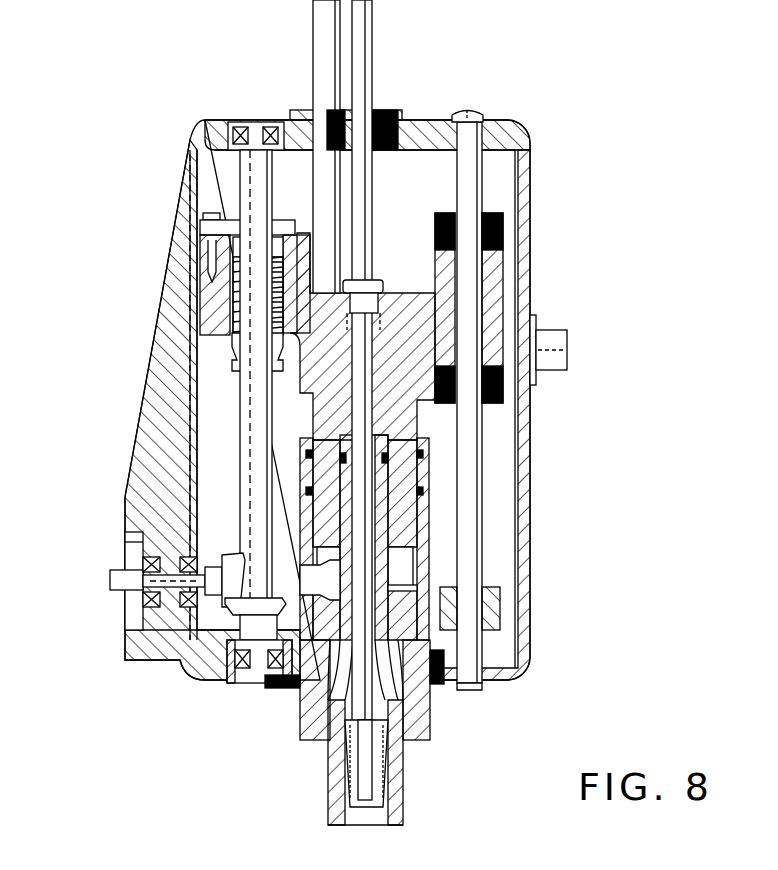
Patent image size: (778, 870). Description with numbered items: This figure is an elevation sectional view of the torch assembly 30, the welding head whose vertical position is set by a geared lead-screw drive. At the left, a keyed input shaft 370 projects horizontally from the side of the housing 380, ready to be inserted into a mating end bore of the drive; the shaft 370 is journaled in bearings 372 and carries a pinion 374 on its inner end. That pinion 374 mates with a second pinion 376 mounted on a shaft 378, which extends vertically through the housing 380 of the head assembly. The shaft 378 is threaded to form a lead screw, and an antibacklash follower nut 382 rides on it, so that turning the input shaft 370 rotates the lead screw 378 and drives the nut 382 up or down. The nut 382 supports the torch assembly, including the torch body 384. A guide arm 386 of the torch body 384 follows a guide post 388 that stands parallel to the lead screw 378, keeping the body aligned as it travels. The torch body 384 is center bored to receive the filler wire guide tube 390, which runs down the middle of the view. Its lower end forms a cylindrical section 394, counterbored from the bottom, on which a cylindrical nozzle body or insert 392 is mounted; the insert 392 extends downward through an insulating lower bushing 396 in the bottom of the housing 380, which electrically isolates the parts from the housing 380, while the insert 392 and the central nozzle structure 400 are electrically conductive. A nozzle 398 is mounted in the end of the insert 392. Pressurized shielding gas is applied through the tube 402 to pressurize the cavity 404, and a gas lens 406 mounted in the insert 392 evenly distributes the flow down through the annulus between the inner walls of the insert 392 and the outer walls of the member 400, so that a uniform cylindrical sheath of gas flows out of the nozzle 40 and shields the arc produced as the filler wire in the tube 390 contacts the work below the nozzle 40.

The torch assembly 30 is at (180, 86).
The nozzle 40 is at (403, 782).
The keyed input shaft 370 is at (120, 578).
The bearings 372 is at (160, 622).
The pinion 374 is at (217, 570).
The pinion 376 is at (240, 625).
The shaft (lead screw) 378 is at (257, 440).
The housing 380 is at (160, 337).
The antibacklash follower nut 382 is at (245, 245).
The torch body 384 is at (400, 305).
The guide arm 386 is at (500, 265).
The guide post 388 is at (470, 462).
The filler wire guide tube 390 is at (362, 80).
The cylindrical nozzle body (insert) 392 is at (430, 563).
The cylindrical section 394 is at (407, 506).
The insulating lower bushing 396 is at (287, 690).
The nozzle 398 is at (350, 760).
The central nozzle structure 400 is at (380, 578).
The tube 402 is at (318, 25).
The cavity 404 is at (437, 675).
The gas lens 406 is at (327, 577).